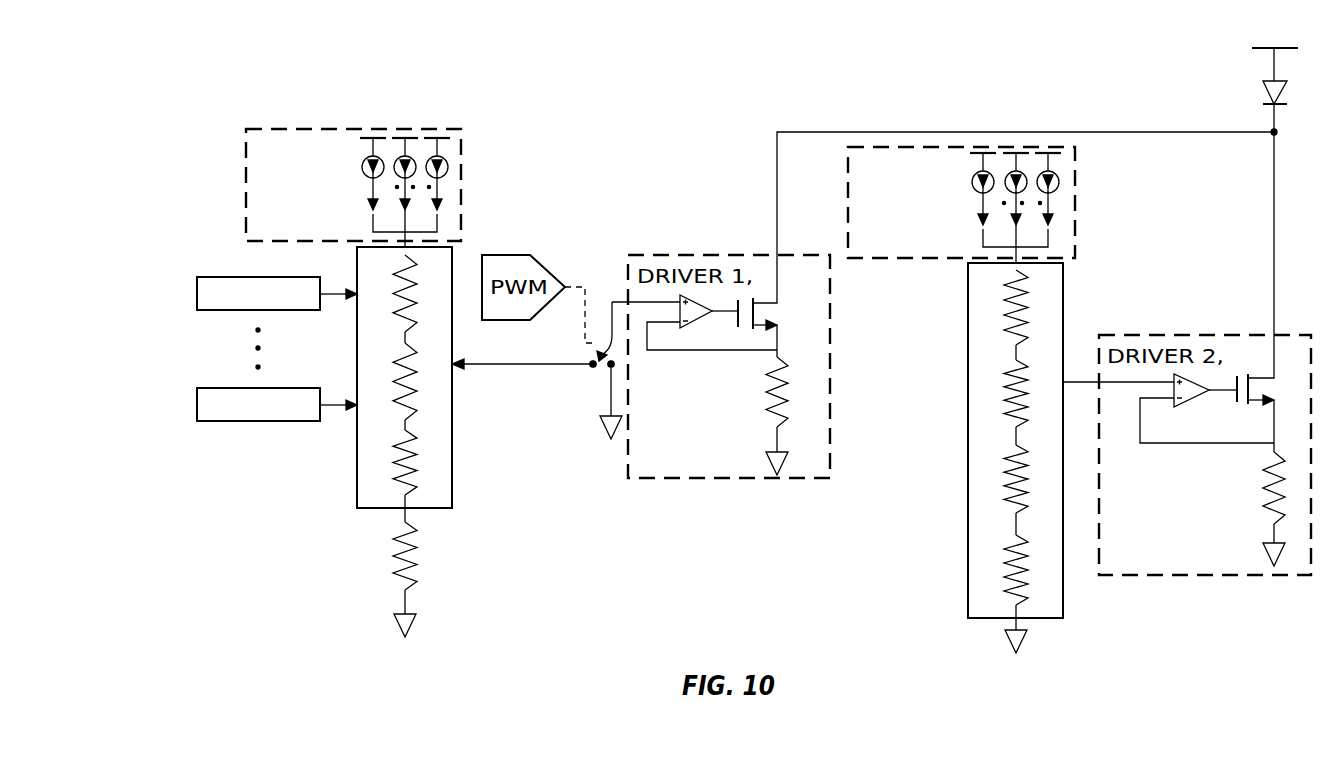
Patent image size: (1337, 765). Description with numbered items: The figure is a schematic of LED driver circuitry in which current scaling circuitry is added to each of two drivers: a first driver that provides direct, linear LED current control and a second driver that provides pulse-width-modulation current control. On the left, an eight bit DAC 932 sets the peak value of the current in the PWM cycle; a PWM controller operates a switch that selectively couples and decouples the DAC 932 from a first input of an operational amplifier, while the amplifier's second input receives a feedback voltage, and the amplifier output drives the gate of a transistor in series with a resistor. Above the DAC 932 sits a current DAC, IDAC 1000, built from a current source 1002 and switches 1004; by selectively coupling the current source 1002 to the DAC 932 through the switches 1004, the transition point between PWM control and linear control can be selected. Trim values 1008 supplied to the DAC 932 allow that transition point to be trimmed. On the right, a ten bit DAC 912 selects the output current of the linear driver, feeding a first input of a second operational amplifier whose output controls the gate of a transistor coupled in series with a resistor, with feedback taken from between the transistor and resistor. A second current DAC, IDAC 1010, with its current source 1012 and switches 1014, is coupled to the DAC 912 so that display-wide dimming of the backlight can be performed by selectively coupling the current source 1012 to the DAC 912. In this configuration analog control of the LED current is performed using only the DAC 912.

The IDAC 1000 is at (396, 151).
The current source 1002 is at (446, 142).
The switches 1004 is at (444, 207).
The trim values 1008 is at (197, 291).
The DAC 932 is at (457, 424).
The IDAC 1010 is at (1002, 167).
The current source 1012 is at (1056, 153).
The switches 1014 is at (1054, 222).
The DAC 912 is at (968, 544).